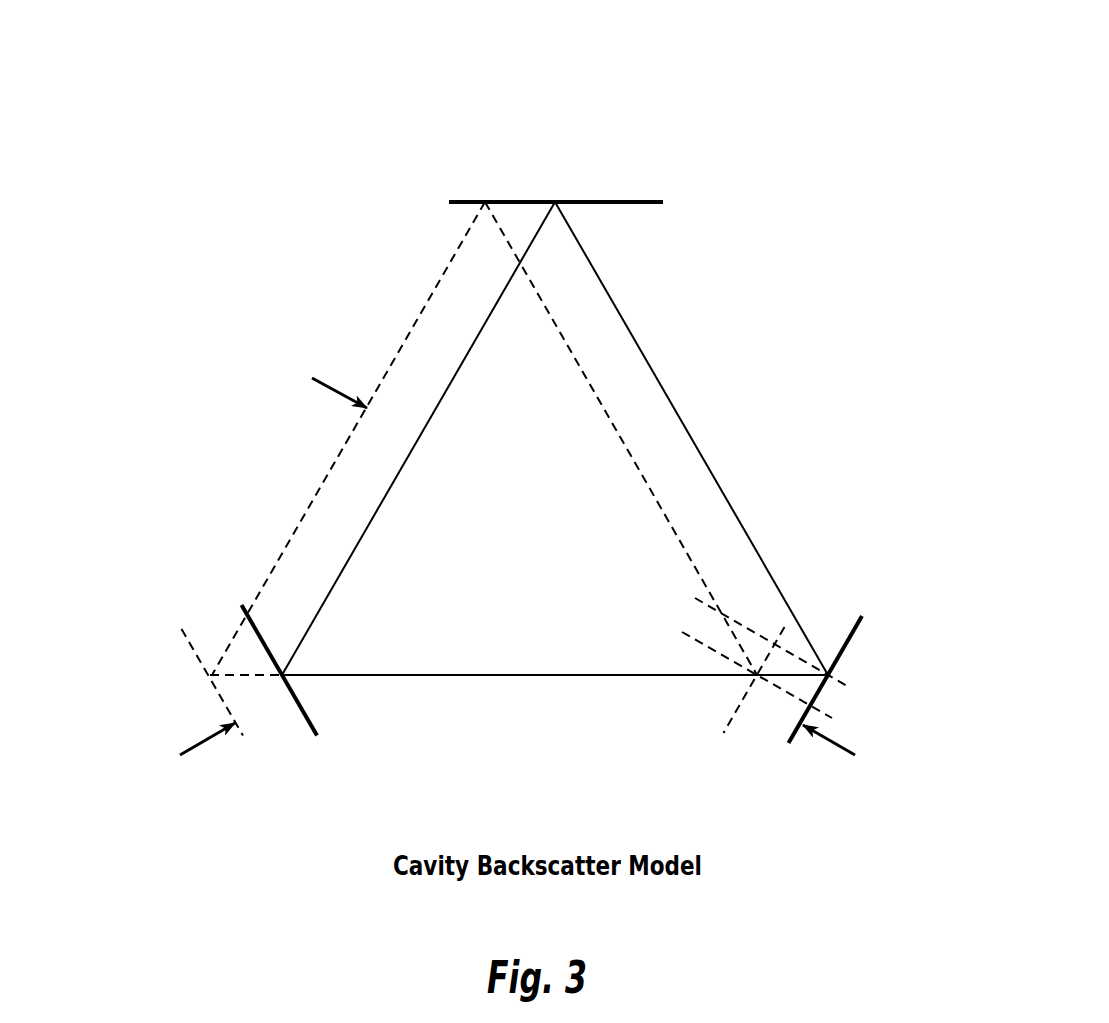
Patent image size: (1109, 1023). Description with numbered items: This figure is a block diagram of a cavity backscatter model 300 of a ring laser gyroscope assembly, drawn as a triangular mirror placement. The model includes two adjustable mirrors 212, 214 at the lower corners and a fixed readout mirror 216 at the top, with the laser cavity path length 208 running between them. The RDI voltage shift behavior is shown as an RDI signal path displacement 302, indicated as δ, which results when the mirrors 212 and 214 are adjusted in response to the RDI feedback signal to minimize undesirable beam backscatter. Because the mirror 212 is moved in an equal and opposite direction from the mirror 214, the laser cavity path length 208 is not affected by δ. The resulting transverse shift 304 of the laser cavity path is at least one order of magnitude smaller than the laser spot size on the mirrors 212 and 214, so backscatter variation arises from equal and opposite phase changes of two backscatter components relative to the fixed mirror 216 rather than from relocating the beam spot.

The cavity backscatter model 300 is at (628, 70).
The laser cavity path length 208 is at (515, 677).
The mirror 212 is at (313, 727).
The mirror 214 is at (853, 630).
The readout mirror 216 is at (580, 200).
The RDI signal path displacement 302 is at (478, 465).
The transverse shift 304 is at (740, 550).